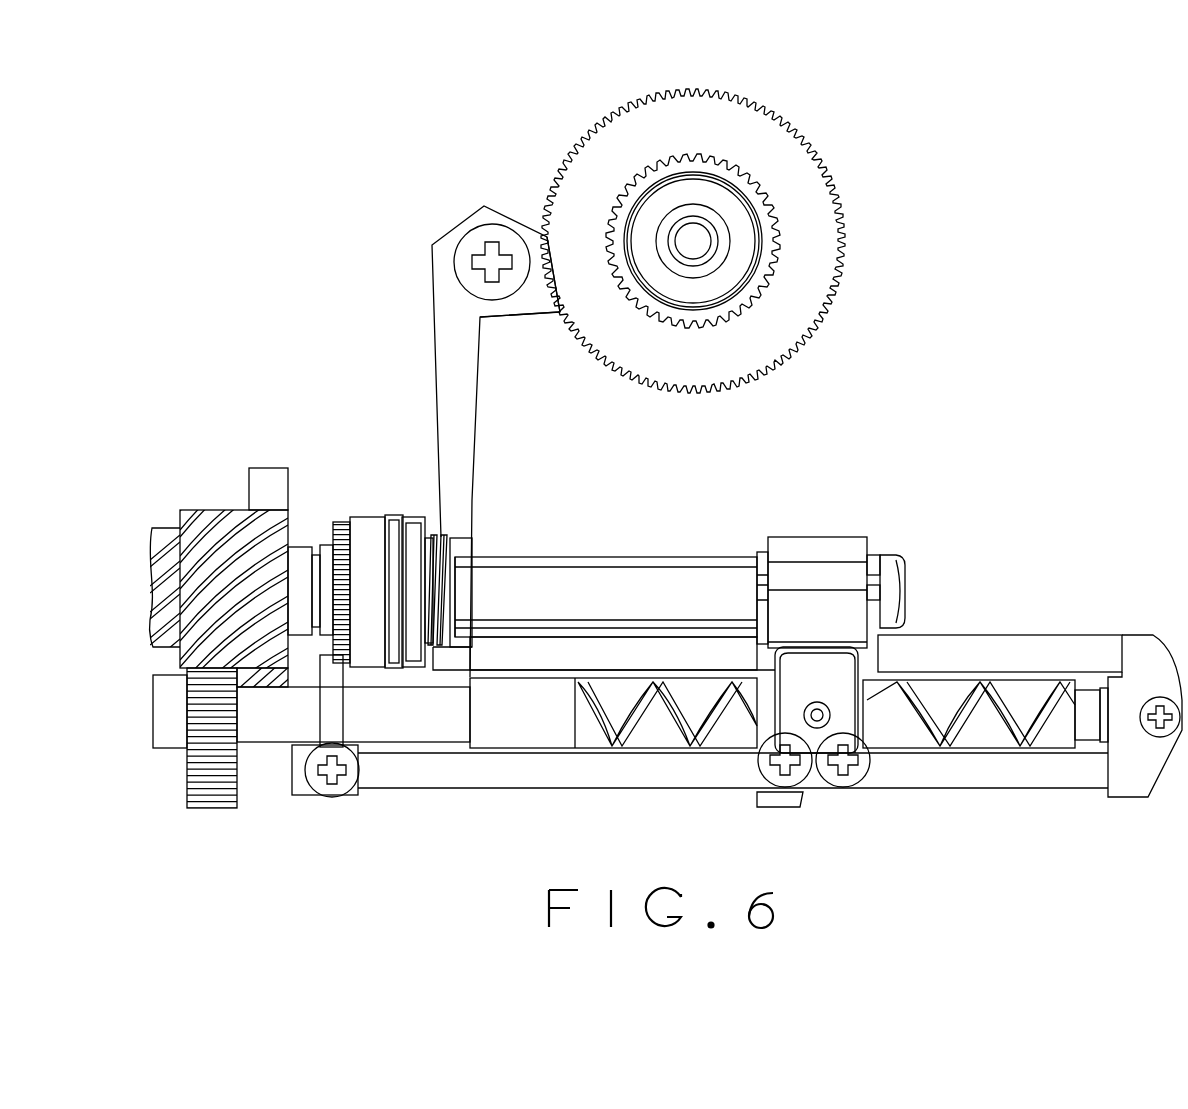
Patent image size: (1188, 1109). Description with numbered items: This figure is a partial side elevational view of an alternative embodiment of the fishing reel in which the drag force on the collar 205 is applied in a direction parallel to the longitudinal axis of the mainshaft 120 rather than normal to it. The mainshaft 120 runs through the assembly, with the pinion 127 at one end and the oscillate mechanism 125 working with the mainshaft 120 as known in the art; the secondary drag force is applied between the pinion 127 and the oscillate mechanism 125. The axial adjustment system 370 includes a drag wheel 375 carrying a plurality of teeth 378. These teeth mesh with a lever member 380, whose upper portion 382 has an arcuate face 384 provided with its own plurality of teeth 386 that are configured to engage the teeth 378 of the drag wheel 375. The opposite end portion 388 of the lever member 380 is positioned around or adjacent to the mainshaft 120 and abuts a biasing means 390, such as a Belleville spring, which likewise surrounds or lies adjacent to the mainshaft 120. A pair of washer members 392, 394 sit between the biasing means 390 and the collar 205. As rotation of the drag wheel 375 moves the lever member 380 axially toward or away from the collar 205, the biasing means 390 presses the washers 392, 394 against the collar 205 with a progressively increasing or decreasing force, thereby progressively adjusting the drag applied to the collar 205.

The axial adjustment system 370 is at (712, 66).
The drag wheel 375 is at (826, 108).
The plurality of teeth 378 is at (557, 298).
The lever member 380 is at (420, 313).
The upper portion 382 is at (478, 213).
The arcuate face 384 is at (560, 315).
The plurality of teeth 386 is at (544, 268).
The opposite end portion 388 is at (473, 602).
The biasing means 390 is at (435, 535).
The washer member 392 is at (389, 670).
The washer member 394 is at (417, 670).
The mainshaft 120 is at (725, 583).
The oscillate mechanism 125 is at (982, 738).
The pinion 127 is at (217, 810).
The collar 205 is at (370, 523).